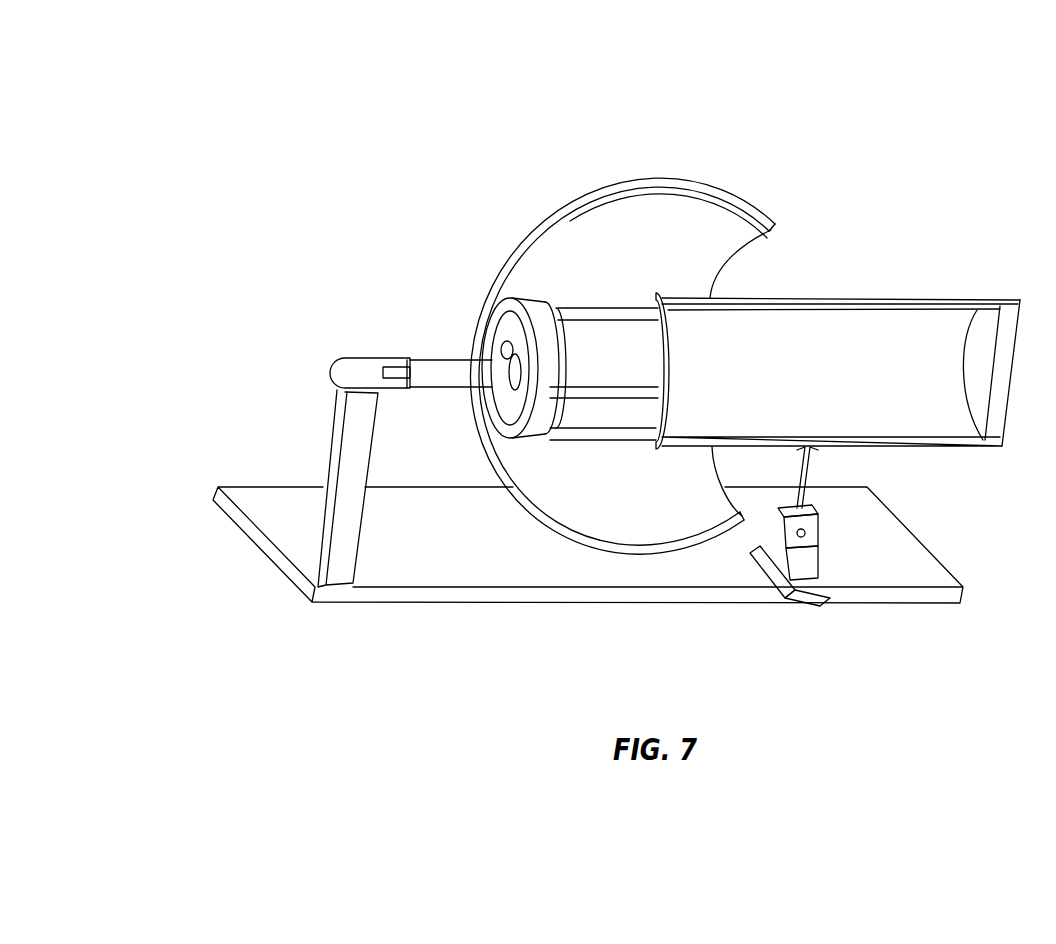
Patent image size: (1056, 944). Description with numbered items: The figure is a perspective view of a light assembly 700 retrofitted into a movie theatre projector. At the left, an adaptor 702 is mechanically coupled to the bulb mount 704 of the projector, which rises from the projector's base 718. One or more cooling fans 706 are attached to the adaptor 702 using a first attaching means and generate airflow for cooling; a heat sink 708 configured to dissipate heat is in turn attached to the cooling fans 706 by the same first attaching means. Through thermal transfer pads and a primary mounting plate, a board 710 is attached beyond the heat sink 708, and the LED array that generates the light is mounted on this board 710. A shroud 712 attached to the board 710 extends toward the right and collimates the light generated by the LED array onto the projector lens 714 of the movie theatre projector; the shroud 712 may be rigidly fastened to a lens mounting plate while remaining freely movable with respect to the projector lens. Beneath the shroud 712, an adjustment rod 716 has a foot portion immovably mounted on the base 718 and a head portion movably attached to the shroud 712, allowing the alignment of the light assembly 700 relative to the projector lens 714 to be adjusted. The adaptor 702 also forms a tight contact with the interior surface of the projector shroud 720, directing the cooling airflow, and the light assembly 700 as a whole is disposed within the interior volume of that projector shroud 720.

The light assembly 700 is at (703, 60).
The adaptor 702 is at (430, 360).
The bulb mount 704 is at (347, 357).
The cooling fans 706 is at (533, 303).
The heat sink 708 is at (607, 303).
The board 710 is at (660, 300).
The shroud 712 is at (917, 297).
The projector lens 714 is at (1018, 300).
The adjustment rod 716 is at (817, 450).
The base 718 is at (873, 602).
The projector shroud 720 is at (580, 542).